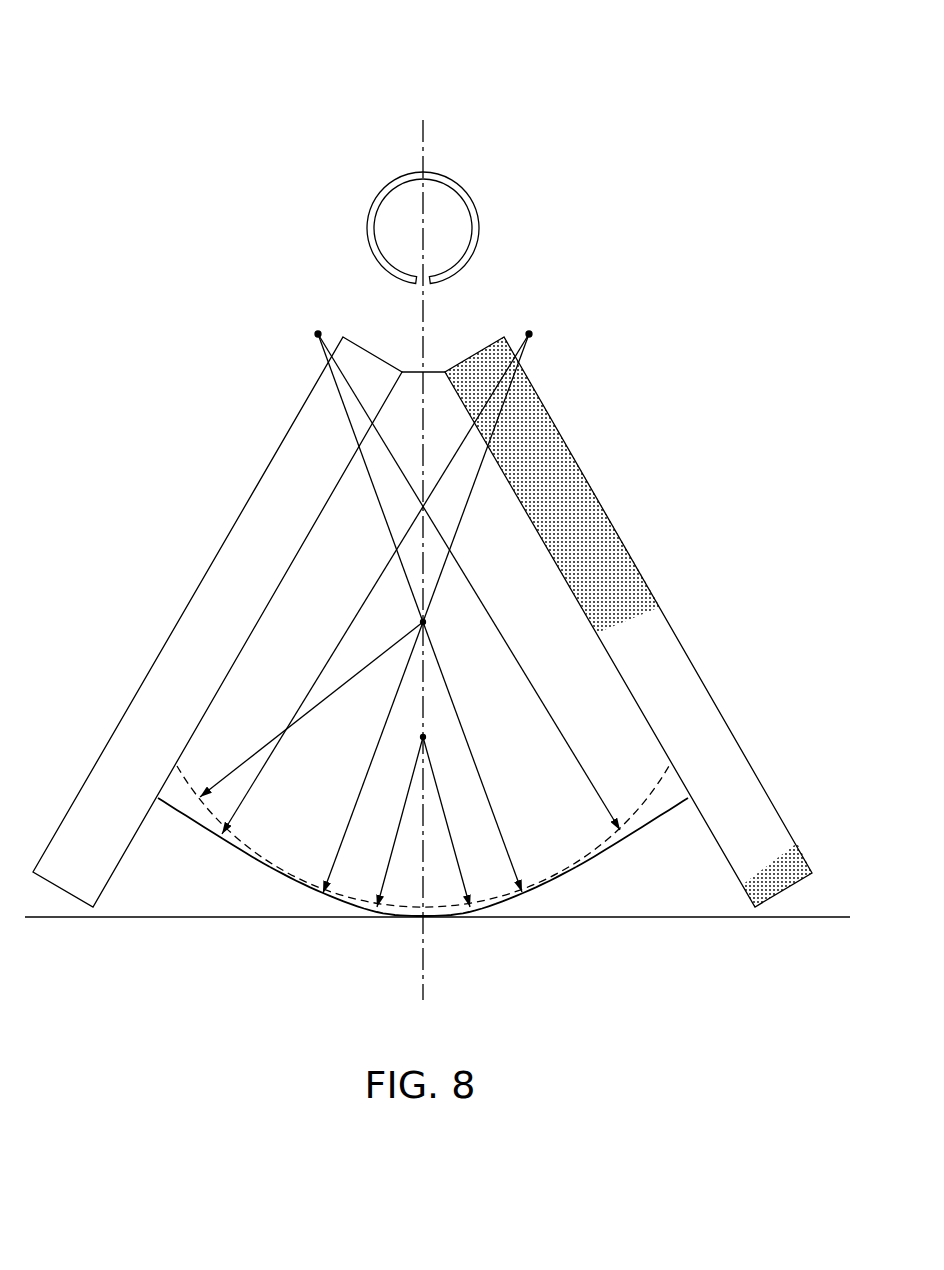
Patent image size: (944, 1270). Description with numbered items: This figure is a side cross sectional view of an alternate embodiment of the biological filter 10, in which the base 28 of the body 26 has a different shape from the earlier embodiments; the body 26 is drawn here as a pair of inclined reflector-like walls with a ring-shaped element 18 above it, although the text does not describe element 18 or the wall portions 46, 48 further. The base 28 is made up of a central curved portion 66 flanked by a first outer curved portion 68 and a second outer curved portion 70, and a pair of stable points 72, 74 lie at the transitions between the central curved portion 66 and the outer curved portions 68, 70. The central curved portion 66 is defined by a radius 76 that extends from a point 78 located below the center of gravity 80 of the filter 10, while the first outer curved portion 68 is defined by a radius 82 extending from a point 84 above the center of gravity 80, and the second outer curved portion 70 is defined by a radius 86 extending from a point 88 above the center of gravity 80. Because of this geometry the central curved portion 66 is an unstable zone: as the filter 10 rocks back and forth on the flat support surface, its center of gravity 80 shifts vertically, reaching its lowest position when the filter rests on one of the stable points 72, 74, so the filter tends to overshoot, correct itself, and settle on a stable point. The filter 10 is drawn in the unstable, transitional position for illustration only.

The filter 10 is at (247, 160).
The lamp 18 is at (439, 212).
The body 26 is at (422, 622).
The base 28 is at (437, 941).
The left reflector 46 is at (217, 622).
The right reflector 48 is at (628, 622).
The central curved portion 66 is at (424, 877).
The first outer curved portion 68 is at (204, 839).
The second outer curved portion 70 is at (643, 839).
The stable point 72 is at (336, 940).
The stable point 74 is at (511, 940).
The radius 76 is at (420, 757).
The point 78 is at (443, 812).
The center of gravity 80 is at (347, 709).
The radius 82 is at (375, 559).
The point 84 is at (555, 309).
The radius 86 is at (469, 557).
The point 88 is at (292, 309).